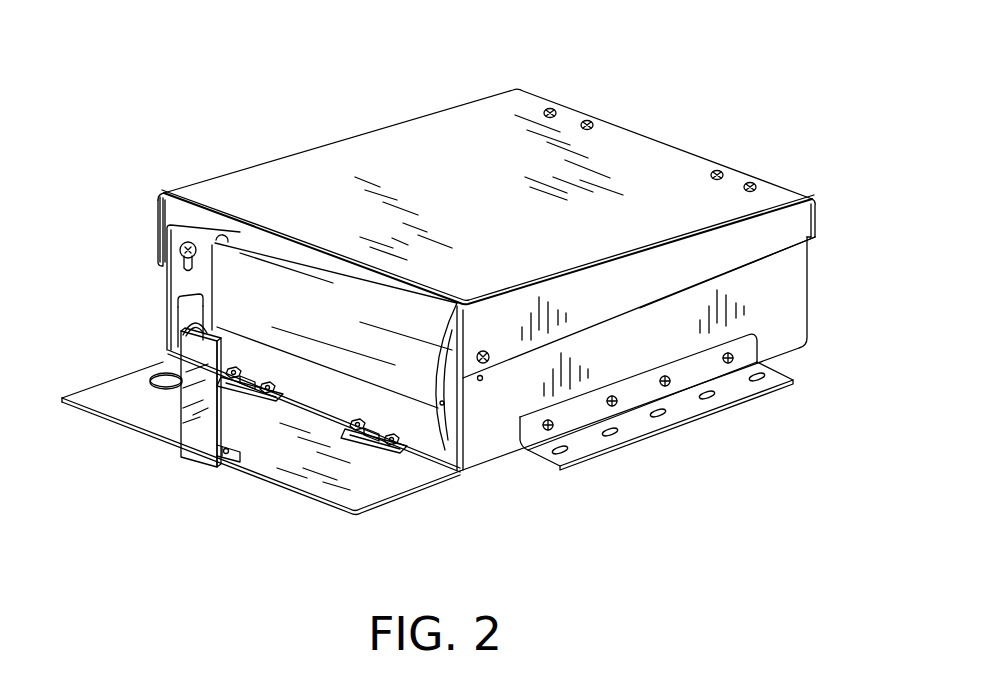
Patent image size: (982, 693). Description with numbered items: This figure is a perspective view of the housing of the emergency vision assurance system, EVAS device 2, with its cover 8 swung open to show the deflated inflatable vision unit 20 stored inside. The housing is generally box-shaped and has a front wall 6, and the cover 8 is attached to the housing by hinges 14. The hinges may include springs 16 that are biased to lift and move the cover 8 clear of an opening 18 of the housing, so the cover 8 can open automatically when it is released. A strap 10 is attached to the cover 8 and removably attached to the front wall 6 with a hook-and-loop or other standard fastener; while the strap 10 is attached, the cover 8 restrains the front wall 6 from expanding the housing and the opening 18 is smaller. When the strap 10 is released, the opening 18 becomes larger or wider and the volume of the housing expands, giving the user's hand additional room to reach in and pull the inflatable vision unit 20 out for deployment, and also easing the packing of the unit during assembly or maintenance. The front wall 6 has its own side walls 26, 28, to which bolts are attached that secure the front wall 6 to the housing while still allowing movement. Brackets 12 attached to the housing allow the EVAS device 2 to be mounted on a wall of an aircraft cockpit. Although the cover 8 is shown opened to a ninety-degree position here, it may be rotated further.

The EVAS device 2 is at (703, 138).
The front wall 6 is at (416, 140).
The cover 8 is at (113, 408).
The strap 10 is at (190, 455).
The brackets 12 is at (683, 408).
The hinges 14 is at (262, 403).
The springs 16 is at (233, 397).
The opening 18 is at (182, 285).
The inflatable vision unit 20 is at (223, 285).
The side wall 26 is at (768, 242).
The side wall 28 is at (160, 202).